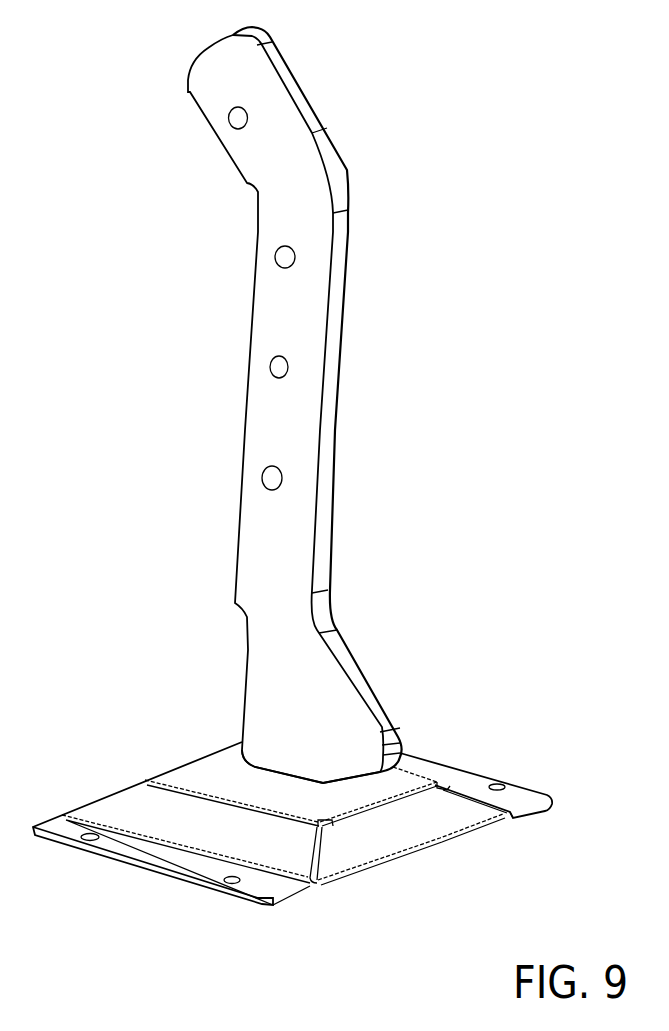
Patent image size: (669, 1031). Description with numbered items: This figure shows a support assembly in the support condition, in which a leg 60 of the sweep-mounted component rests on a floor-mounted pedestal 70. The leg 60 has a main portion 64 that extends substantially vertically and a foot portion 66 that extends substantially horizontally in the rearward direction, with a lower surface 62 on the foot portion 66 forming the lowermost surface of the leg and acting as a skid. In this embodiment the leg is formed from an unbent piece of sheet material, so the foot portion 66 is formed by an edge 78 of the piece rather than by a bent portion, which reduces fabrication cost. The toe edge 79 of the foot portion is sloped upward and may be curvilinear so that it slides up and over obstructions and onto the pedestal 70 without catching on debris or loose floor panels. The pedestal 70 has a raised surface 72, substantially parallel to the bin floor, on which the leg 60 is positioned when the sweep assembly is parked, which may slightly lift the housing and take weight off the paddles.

The leg 60 is at (297, 428).
The lower surface 62 is at (297, 777).
The main portion 64 is at (282, 318).
The foot portion 66 is at (272, 710).
The pedestal 70 is at (131, 872).
The raised surface 72 is at (202, 770).
The edge 78 is at (273, 770).
The toe edge 79 is at (357, 778).